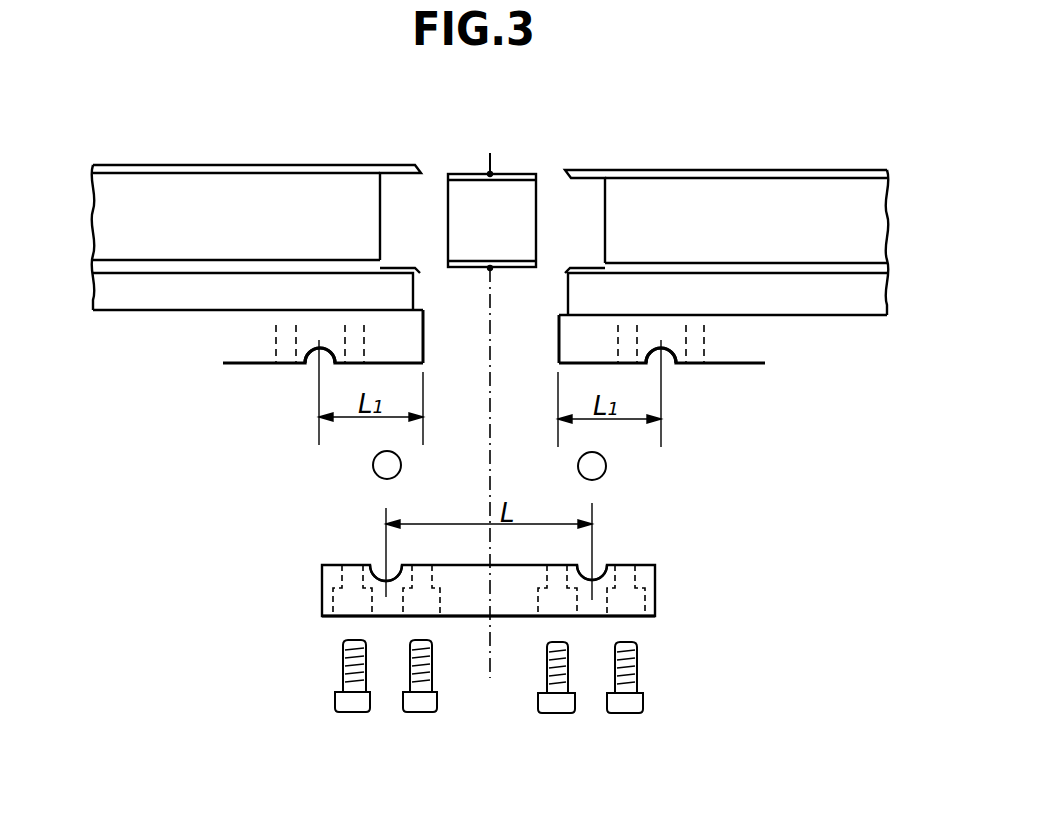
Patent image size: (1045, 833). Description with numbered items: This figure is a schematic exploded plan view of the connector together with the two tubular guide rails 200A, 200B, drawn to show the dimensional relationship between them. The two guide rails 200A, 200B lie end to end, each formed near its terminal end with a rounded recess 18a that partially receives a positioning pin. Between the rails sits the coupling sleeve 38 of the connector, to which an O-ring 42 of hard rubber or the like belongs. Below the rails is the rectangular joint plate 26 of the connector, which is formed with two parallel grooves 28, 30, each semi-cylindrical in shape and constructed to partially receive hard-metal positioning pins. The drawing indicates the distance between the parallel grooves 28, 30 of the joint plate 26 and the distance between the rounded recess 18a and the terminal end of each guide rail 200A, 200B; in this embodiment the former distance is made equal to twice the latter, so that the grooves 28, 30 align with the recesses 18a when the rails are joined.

The guide rail 200A is at (185, 311).
The guide rail 200B is at (813, 317).
The rounded recess 18a is at (311, 356).
The coupling sleeve 38 is at (523, 172).
The O-ring 42 is at (493, 172).
The joint plate 26 is at (656, 585).
The parallel groove 28 is at (378, 572).
The parallel groove 30 is at (598, 570).